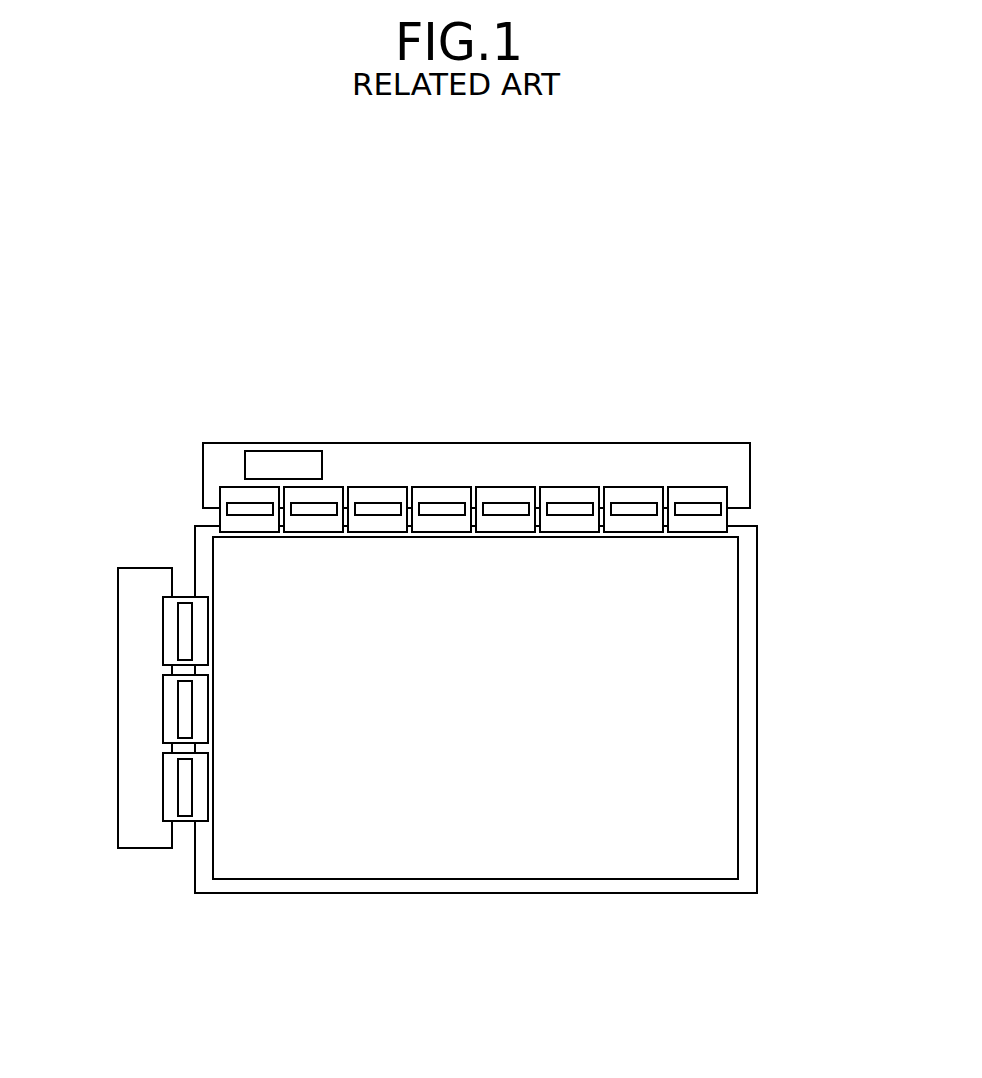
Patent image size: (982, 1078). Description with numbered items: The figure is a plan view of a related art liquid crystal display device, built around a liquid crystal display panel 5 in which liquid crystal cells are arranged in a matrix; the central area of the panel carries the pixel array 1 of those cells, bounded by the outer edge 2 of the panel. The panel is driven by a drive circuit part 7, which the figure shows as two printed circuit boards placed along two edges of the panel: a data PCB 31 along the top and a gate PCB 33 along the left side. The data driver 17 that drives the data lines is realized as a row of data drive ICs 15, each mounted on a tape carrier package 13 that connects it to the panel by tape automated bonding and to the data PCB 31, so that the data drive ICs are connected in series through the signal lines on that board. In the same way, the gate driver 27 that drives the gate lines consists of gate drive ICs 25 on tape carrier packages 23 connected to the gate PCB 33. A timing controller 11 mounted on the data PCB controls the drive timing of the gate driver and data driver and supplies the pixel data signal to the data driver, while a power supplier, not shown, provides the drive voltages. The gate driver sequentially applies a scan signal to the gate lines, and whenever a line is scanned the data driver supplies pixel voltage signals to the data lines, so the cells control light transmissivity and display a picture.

The liquid crystal panel (pixel array) 1 is at (739, 631).
The panel substrate / non-display region 2 is at (757, 572).
The liquid crystal display panel 5 is at (465, 651).
The drive circuit part 7 is at (383, 601).
The timing controller 11 is at (280, 451).
The tape carrier package 13 is at (528, 464).
The data drive IC 15 is at (700, 505).
The data driver 17 is at (763, 484).
The tape carrier package 23 is at (165, 793).
The gate drive IC 25 is at (125, 750).
The gate driver 27 is at (181, 845).
The data PCB 31 is at (618, 457).
The gate PCB 33 is at (127, 620).